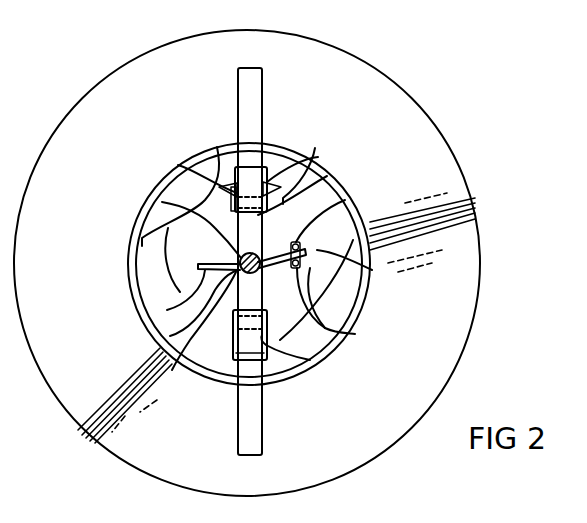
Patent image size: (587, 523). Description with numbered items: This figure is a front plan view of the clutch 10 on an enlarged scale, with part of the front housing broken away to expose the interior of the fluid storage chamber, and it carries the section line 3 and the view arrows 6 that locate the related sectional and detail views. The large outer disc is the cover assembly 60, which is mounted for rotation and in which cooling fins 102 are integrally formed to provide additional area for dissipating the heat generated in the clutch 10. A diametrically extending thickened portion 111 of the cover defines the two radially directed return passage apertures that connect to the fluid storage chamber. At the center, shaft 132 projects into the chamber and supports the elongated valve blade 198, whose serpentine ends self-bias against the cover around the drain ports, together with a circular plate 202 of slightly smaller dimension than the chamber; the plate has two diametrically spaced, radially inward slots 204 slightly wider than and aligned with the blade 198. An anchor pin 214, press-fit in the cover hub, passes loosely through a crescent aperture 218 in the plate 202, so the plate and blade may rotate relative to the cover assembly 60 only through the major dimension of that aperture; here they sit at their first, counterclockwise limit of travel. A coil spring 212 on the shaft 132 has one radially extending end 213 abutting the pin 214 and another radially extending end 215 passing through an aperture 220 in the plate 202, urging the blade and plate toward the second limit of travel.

The clutch 10 is at (441, 105).
The cover assembly 60 is at (112, 90).
The cooling fins 102 is at (476, 203).
The thickened portion 111 is at (240, 94).
The shaft 132 is at (162, 202).
The valve blade 198 is at (327, 176).
The circular plate 202 is at (303, 165).
The slots 204 is at (178, 165).
The coil spring 212 is at (196, 375).
The radially extending end 213 is at (309, 261).
The anchor pin 214 is at (348, 308).
The radially extending end 215 is at (170, 336).
The crescent aperture 218 is at (345, 200).
The aperture 220 is at (167, 310).
The section line 3- 3 is at (250, 58).
The view direction 6 is at (220, 252).